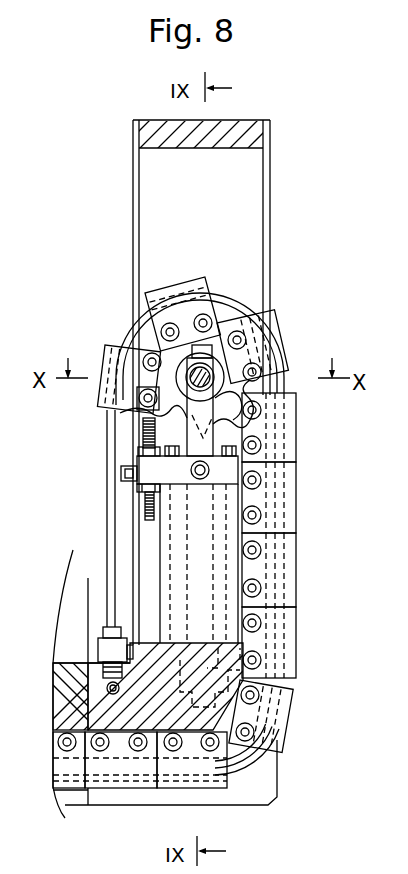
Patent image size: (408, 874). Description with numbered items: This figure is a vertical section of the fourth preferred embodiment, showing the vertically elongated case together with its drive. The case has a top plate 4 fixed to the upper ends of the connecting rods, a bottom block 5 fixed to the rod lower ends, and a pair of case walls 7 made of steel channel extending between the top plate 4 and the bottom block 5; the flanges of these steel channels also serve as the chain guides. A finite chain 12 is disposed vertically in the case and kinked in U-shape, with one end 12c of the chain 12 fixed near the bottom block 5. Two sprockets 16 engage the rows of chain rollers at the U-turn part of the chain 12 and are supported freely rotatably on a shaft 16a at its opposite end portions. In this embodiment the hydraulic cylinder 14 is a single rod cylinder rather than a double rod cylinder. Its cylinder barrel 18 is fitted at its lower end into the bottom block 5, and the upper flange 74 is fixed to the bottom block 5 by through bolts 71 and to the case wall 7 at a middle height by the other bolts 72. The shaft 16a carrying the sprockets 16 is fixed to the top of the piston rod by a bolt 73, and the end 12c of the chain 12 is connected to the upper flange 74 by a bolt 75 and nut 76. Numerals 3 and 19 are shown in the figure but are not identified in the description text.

The chain guide head 3 is at (292, 130).
The top plate 4 is at (236, 134).
The bottom block 5 is at (228, 706).
The case walls 7 is at (270, 216).
The finite chain 12 is at (302, 565).
The one end of chain 12c is at (140, 408).
The hydraulic cylinder 14 is at (344, 447).
The sprockets 16 is at (216, 434).
The shaft 16a is at (214, 381).
The cylinder barrel 18 is at (262, 447).
The link plate 19 is at (205, 538).
The through bolts 71 is at (174, 572).
The other bolts 72 is at (121, 476).
The bolt 73 is at (213, 334).
The upper flange 74 is at (177, 473).
The bolt 75 is at (142, 432).
The nut 76 is at (138, 449).